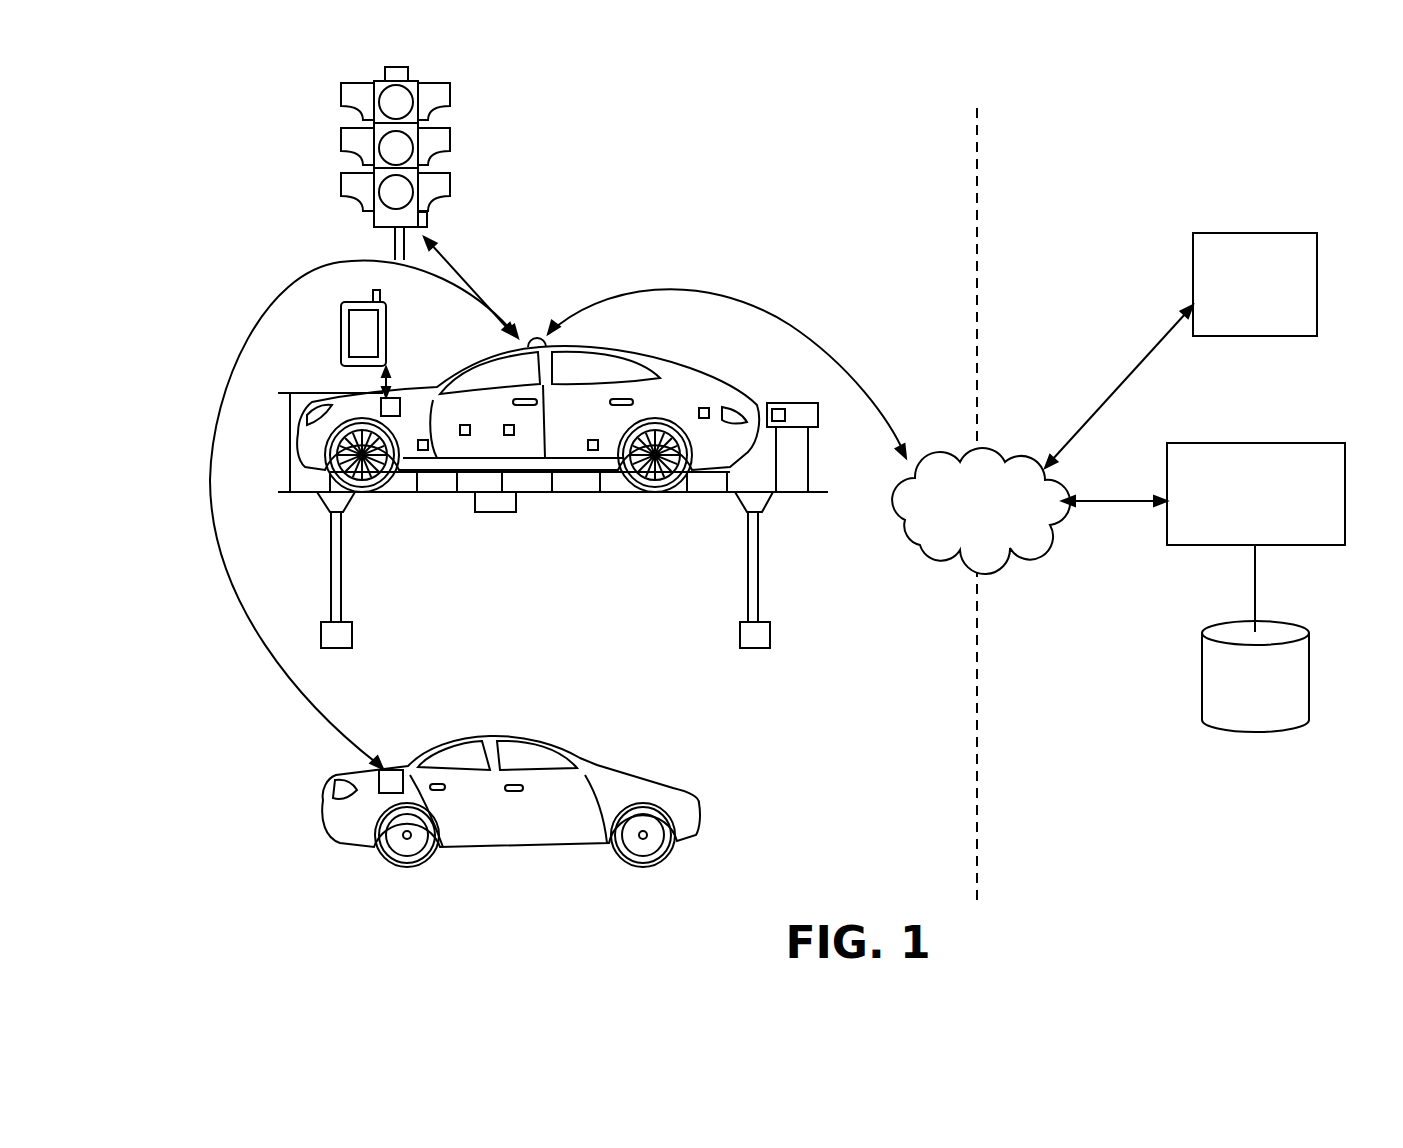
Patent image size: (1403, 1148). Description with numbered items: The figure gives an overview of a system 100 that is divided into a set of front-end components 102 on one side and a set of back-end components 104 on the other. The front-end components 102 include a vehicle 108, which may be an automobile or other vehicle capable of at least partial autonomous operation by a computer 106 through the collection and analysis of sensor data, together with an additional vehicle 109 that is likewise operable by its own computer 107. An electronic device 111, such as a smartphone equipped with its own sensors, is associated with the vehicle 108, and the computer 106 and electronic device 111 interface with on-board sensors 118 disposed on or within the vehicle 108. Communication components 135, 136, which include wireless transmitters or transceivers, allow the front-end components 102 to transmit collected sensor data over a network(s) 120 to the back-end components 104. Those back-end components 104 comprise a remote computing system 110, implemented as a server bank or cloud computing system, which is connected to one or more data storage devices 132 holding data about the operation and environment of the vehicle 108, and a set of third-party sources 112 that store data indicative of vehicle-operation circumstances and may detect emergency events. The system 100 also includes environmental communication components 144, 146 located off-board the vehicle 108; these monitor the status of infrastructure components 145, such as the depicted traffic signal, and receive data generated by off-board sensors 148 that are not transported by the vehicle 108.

The system 100 is at (992, 70).
The front-end components 102 is at (803, 203).
The back-end components 104 is at (1102, 206).
The computer 106 is at (401, 400).
The computer 107 is at (390, 770).
The vehicle 108 is at (605, 352).
The additional vehicle 109 is at (323, 803).
The remote computing system 110 is at (1312, 443).
The electronic device 111 is at (341, 312).
The third-party sources 112 is at (1290, 232).
The on-board sensors 118 is at (428, 441).
The network(s) 120 is at (938, 465).
The data storage devices 132 is at (1298, 627).
The communication component 135 is at (540, 336).
The communication component 136 is at (374, 293).
The environmental communication component 144 is at (818, 416).
The infrastructure components 145 is at (375, 227).
The environmental communication component 146 is at (428, 222).
The off-board sensors 148 is at (386, 72).